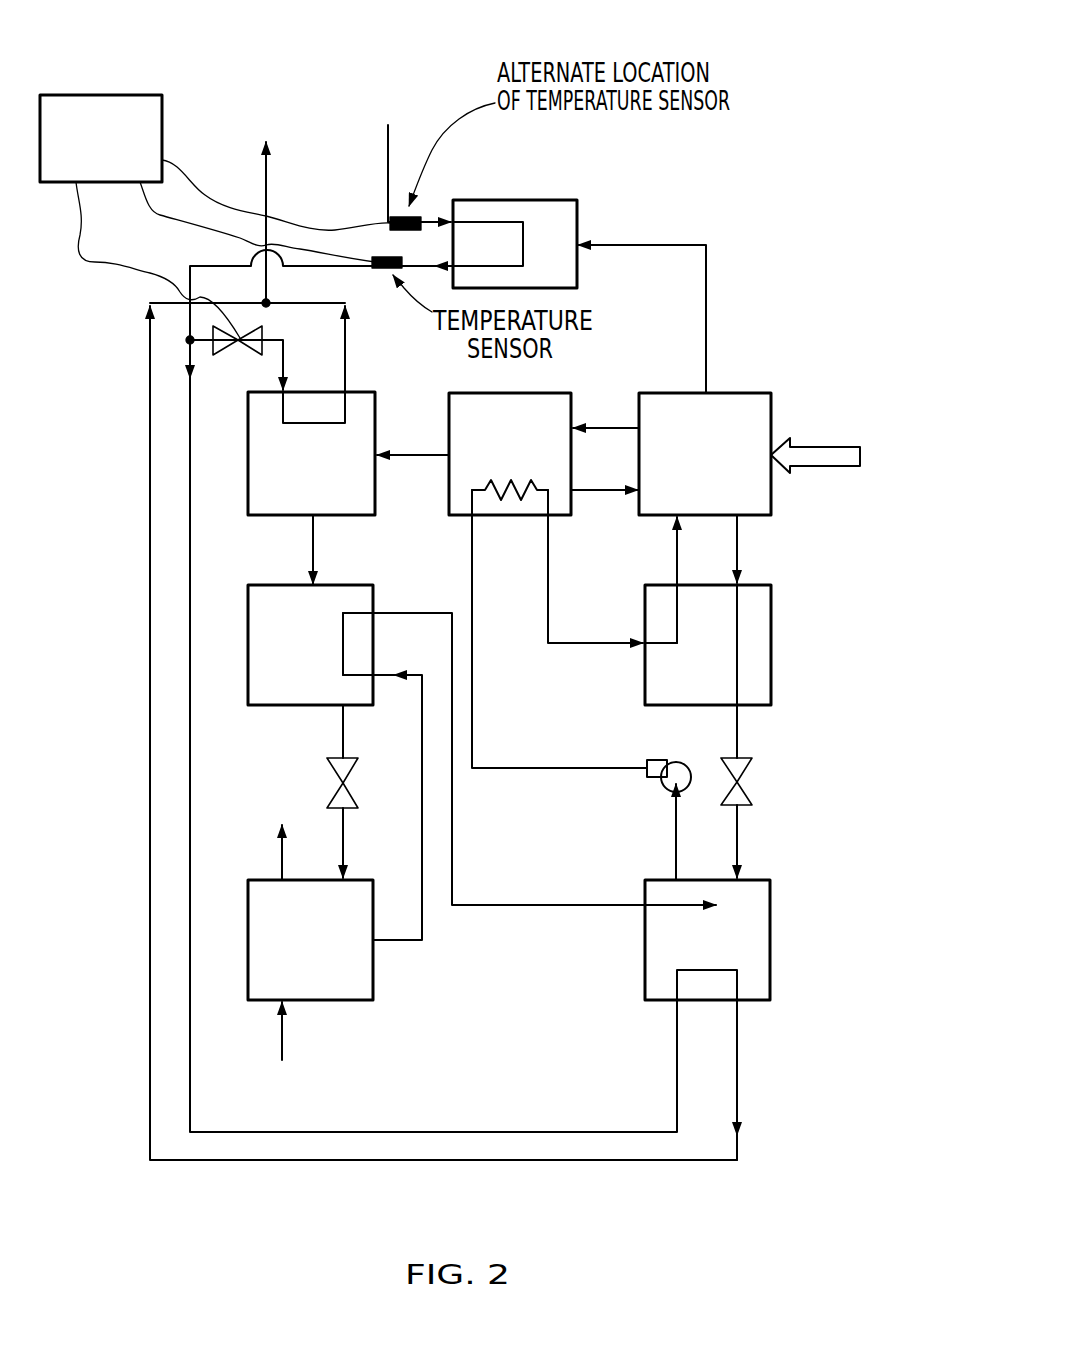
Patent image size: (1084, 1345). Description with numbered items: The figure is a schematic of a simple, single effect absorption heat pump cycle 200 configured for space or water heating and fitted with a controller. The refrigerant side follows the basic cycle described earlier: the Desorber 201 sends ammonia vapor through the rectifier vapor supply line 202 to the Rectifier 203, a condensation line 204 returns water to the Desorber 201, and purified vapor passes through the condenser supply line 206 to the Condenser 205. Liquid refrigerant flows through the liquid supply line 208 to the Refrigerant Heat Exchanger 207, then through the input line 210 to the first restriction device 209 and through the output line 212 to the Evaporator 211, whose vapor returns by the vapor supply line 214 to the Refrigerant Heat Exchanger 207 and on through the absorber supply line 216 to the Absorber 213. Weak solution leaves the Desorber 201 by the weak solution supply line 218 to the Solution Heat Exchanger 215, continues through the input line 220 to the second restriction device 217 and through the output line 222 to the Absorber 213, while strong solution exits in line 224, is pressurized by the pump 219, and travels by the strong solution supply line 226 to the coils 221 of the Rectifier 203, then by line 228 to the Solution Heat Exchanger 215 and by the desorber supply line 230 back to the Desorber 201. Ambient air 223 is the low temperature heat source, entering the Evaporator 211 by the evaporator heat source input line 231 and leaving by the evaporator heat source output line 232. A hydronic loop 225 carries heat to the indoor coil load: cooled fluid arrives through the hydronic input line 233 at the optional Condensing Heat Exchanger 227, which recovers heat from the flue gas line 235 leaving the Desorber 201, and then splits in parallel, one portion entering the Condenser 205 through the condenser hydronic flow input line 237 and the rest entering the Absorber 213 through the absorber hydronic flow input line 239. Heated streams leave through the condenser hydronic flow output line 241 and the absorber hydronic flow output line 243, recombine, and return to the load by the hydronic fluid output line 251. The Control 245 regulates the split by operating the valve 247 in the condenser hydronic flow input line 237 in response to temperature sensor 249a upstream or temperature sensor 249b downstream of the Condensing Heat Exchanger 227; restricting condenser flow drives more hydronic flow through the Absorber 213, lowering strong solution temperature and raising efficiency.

The absorption heat pump cycle 200 is at (838, 48).
The Desorber 201 is at (768, 454).
The refrigerant vapor line desorber to rectifier 202 is at (612, 387).
The Rectifier 203 is at (510, 494).
The return line rectifier to desorber 204 is at (600, 534).
The Condenser 205 is at (215, 461).
The refrigerant line rectifier to condenser 206 is at (413, 495).
The Refrigerant Heat Exchanger 207 is at (335, 626).
The liquid refrigerant line condenser to RHX 208 is at (260, 549).
The thermal expansion valve TEV 209 is at (307, 783).
The line RHX to expansion valve 210 is at (282, 731).
The Evaporator 211 is at (325, 977).
The line expansion valve to evaporator 212 is at (375, 843).
The Absorber 213 is at (754, 940).
The vapor line evaporator to RHX 214 is at (415, 853).
The Solution Heat Exchanger 215 is at (755, 645).
The vapor line RHX to absorber 216 is at (529, 799).
The solution expansion valve 217 is at (779, 780).
The strong solution line desorber to SHX 218 is at (801, 559).
The solution pump 219 is at (610, 798).
The solution line SHX to valve 220 is at (794, 729).
The rectifier heat exchanger coil 221 is at (469, 450).
The solution line valve to absorber 222 is at (797, 848).
The ambient air 223 is at (340, 1094).
The line 224 is at (608, 840).
The hydronic loop 225 is at (410, 737).
The solution line pump to rectifier 226 is at (559, 629).
The Condensing Heat Exchanger 227 is at (552, 214).
The solution line rectifier to SHX 228 is at (569, 584).
The solution line SHX to desorber 230 is at (620, 580).
The evaporator heat source input line 231 is at (185, 1022).
The evaporator heat source output line 232 is at (168, 863).
The hydronic input line 233 is at (374, 127).
The flue gas line 235 is at (668, 300).
The condenser hydronic flow input line 237 is at (259, 353).
The absorber hydronic flow input line 239 is at (431, 691).
The condenser hydronic flow output line 241 is at (356, 364).
The absorber hydronic flow output line 243 is at (787, 1080).
The Control 245 is at (95, 101).
The valve 247 is at (160, 315).
The temperature sensor 249a is at (349, 280).
The temperature sensor 249b is at (369, 200).
The hydronic fluid output line 251 is at (240, 172).